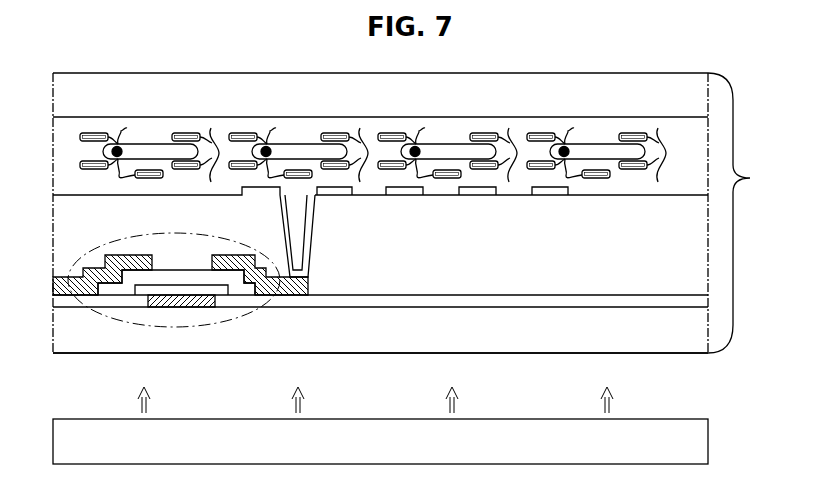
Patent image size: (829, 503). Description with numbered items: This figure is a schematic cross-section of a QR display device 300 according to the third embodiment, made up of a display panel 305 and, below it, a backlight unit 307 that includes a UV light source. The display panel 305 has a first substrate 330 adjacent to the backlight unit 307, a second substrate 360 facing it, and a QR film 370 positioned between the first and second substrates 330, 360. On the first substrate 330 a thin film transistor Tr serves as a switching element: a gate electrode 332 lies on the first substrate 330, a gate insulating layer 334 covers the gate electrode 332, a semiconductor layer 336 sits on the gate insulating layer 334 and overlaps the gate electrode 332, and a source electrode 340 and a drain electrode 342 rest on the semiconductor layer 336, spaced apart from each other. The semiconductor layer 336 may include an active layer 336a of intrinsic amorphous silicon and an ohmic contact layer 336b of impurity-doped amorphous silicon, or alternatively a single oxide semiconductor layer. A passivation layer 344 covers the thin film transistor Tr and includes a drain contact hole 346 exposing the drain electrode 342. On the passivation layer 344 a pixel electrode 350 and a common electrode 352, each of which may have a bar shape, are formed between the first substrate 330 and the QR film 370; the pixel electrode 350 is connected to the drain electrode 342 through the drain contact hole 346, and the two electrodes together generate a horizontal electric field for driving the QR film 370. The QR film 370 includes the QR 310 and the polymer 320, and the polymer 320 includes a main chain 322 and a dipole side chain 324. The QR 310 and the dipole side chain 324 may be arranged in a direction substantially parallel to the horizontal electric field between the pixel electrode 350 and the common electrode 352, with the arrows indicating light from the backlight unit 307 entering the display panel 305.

The QR display device 300 is at (378, 59).
The display panel 305 is at (745, 213).
The backlight unit 307 is at (681, 454).
The QR 310 is at (151, 148).
The polymer 320 is at (98, 92).
The main chain 322 is at (126, 128).
The dipole side chain 324 is at (93, 131).
The first substrate 330 is at (681, 347).
The gate electrode 332 is at (178, 308).
The gate insulating layer 334 is at (370, 305).
The semiconductor layer 336 is at (256, 351).
The active layer 336a is at (235, 293).
The ohmic contact layer 336b is at (266, 281).
The source electrode 340 is at (134, 254).
The drain electrode 342 is at (241, 254).
The passivation layer 344 is at (432, 294).
The drain contact hole 346 is at (297, 230).
The pixel electrode 350 is at (335, 197).
The common electrode 352 is at (403, 197).
The second substrate 360 is at (680, 99).
The QR film 370 is at (680, 164).
The thin film transistor Tr is at (138, 327).